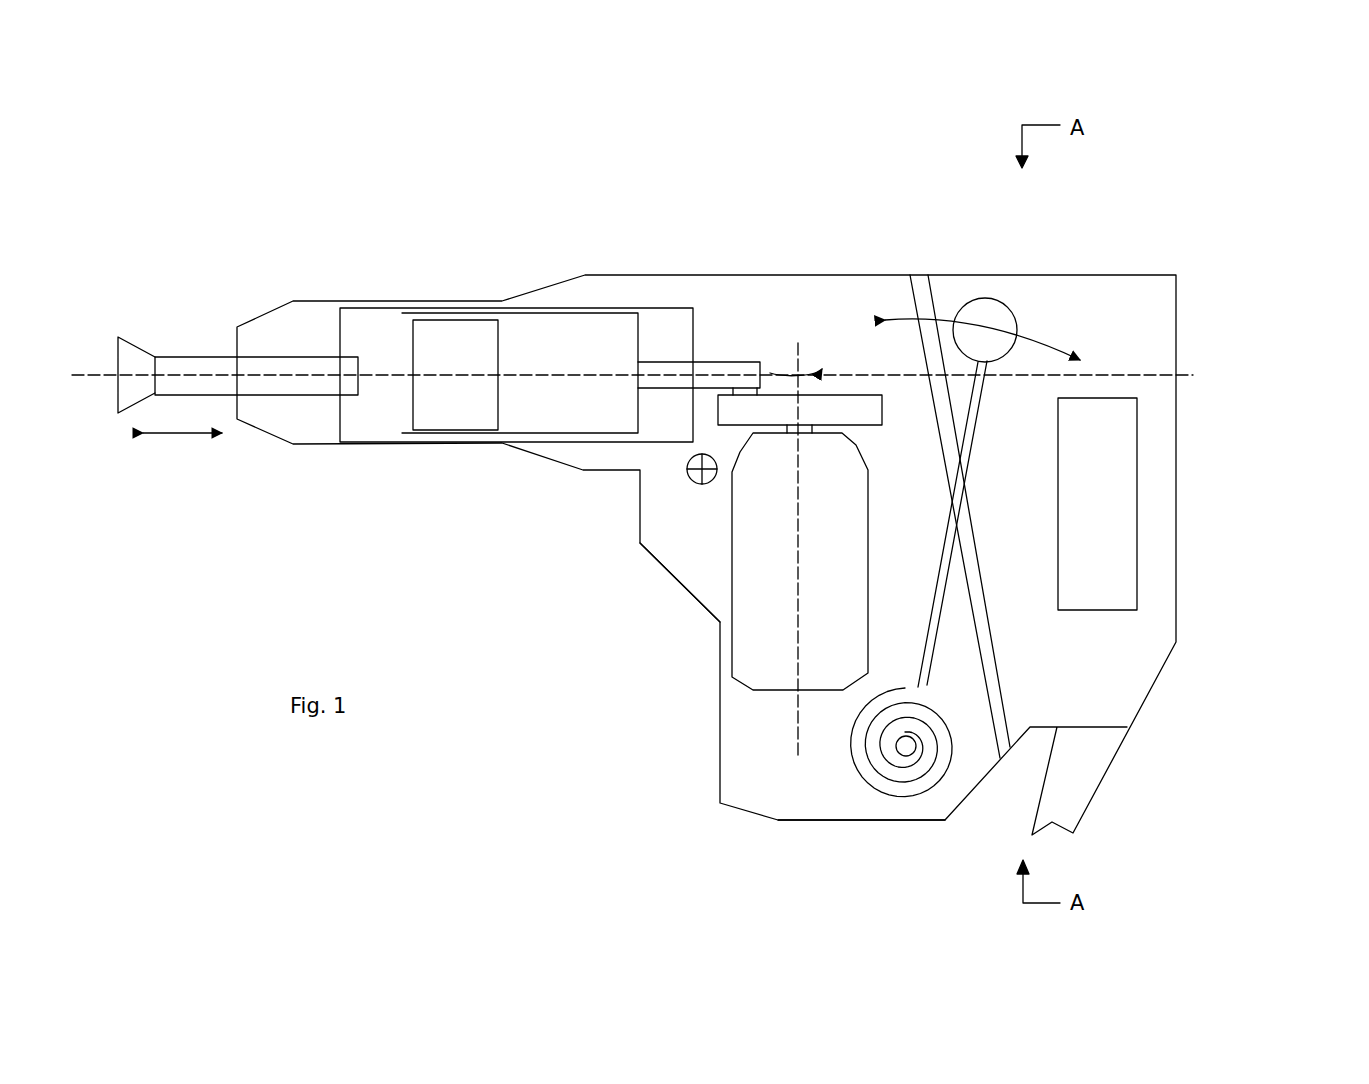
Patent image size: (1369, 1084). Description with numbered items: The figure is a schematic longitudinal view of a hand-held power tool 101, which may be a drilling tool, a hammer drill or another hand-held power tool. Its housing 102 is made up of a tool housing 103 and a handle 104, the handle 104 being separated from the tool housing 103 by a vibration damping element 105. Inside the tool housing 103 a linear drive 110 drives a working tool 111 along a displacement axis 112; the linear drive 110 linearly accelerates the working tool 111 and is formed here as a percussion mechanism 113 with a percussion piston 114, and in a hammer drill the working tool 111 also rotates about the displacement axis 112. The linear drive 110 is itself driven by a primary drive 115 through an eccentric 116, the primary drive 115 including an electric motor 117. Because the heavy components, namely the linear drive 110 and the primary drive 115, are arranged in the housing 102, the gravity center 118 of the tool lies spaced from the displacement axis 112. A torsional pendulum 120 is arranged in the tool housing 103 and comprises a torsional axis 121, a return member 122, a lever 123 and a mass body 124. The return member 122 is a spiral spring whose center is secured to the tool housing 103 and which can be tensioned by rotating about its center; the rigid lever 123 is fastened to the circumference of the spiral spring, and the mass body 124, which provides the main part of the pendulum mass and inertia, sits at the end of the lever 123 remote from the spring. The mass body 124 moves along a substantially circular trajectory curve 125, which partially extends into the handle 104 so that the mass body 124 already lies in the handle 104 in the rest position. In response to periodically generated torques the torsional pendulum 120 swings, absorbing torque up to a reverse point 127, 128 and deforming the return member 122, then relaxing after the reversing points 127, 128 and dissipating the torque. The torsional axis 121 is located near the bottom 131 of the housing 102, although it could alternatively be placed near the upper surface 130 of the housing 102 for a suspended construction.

The hand-held power tool 101 is at (312, 151).
The housing 102 is at (827, 162).
The tool housing 103 is at (872, 273).
The handle 104 is at (965, 275).
The vibration damping element 105 is at (923, 275).
The linear drive 110 is at (670, 308).
The working tool 111 is at (185, 357).
The displacement axis 112 is at (93, 375).
The percussion mechanism 113 is at (530, 433).
The percussion piston 114 is at (445, 423).
The primary drive 115 is at (718, 593).
The eccentric 116 is at (753, 415).
The electric motor 117 is at (743, 650).
The gravity center 118 is at (688, 480).
The torsional pendulum 120 is at (1283, 395).
The torsional axis 121 is at (903, 747).
The return member 122 is at (947, 770).
The lever 123 is at (973, 397).
The mass body 124 is at (1003, 318).
The trajectory curve 125 is at (1040, 343).
The reverse point 127 is at (878, 382).
The reverse point 128 is at (1060, 400).
The upper surface 130 is at (1023, 270).
The bottom 131 is at (883, 823).